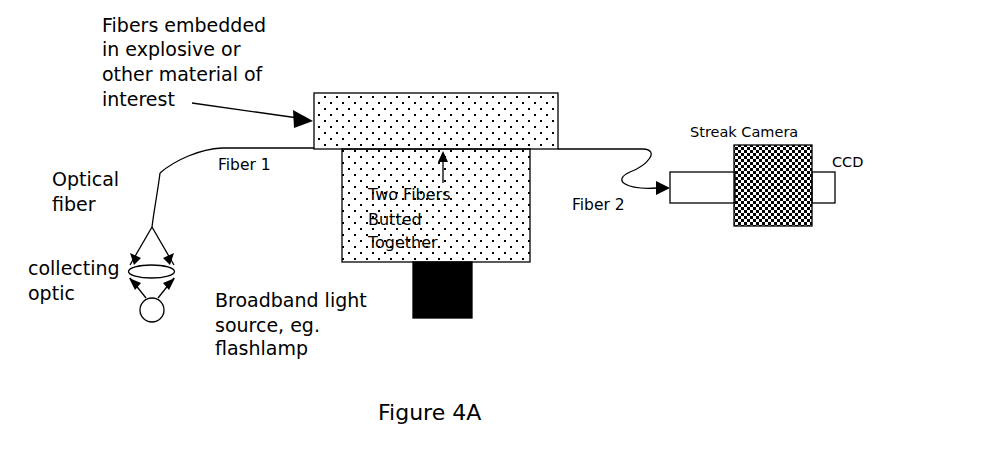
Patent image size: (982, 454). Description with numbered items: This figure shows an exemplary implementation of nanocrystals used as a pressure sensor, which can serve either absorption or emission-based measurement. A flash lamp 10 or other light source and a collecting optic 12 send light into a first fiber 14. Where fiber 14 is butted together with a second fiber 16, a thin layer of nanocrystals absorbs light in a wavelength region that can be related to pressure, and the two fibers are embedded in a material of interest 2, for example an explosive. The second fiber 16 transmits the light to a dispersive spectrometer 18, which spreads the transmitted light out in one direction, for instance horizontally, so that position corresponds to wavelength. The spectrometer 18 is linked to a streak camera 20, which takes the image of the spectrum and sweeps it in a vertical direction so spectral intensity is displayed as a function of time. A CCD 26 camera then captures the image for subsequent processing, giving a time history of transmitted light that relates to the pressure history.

The material of interest with embedded fibers 2 is at (313, 97).
The flash lamp 10 is at (140, 314).
The collecting optic 12 is at (175, 273).
The fiber 14 is at (160, 173).
The second fiber 16 is at (582, 149).
The spectrometer 18 is at (698, 203).
The streak camera 20 is at (768, 227).
The CCD camera 26 is at (835, 187).